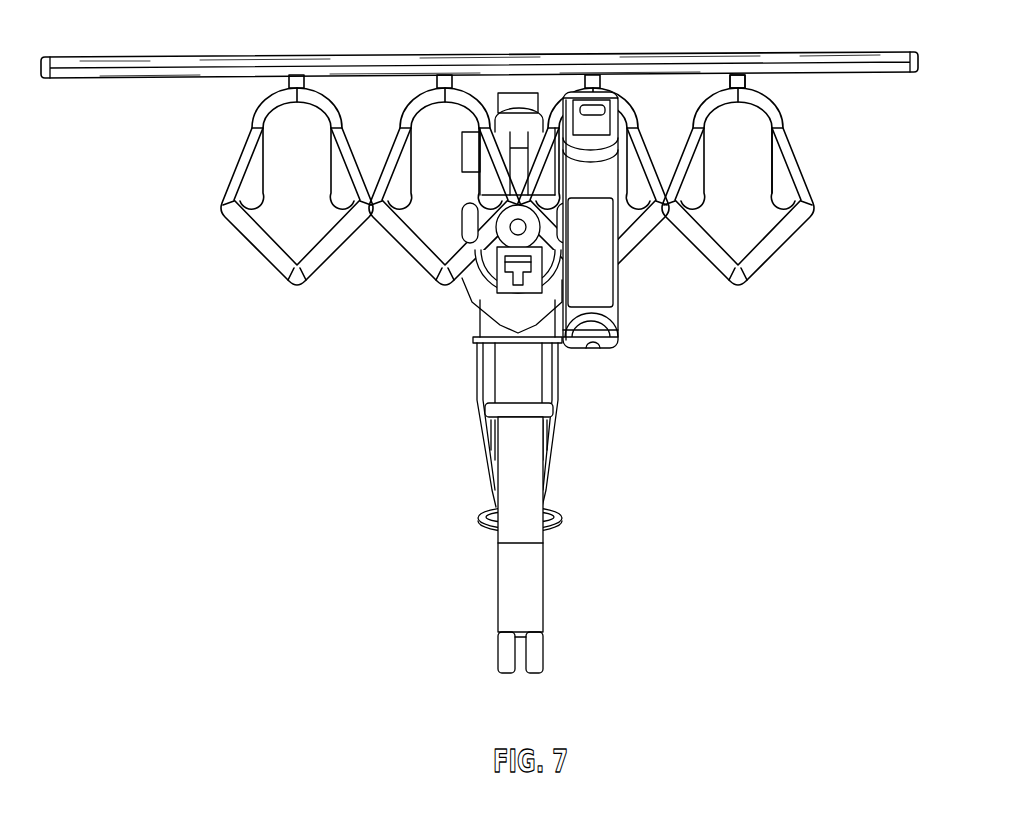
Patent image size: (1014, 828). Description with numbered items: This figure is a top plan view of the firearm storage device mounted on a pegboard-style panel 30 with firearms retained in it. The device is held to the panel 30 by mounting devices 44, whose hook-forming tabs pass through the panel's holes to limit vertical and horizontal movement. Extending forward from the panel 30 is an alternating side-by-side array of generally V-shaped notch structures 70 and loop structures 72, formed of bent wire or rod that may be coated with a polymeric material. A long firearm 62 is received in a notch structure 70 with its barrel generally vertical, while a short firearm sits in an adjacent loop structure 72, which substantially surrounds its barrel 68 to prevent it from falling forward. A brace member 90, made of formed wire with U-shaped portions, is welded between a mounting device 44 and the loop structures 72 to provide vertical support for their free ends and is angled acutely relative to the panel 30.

The panel 30 is at (140, 56).
The mounting device 44 is at (748, 79).
The long firearm 62 is at (497, 596).
The barrel 68 is at (618, 279).
The notch structure 70 is at (328, 257).
The loop structure 72 is at (758, 228).
The brace member 90 is at (780, 177).